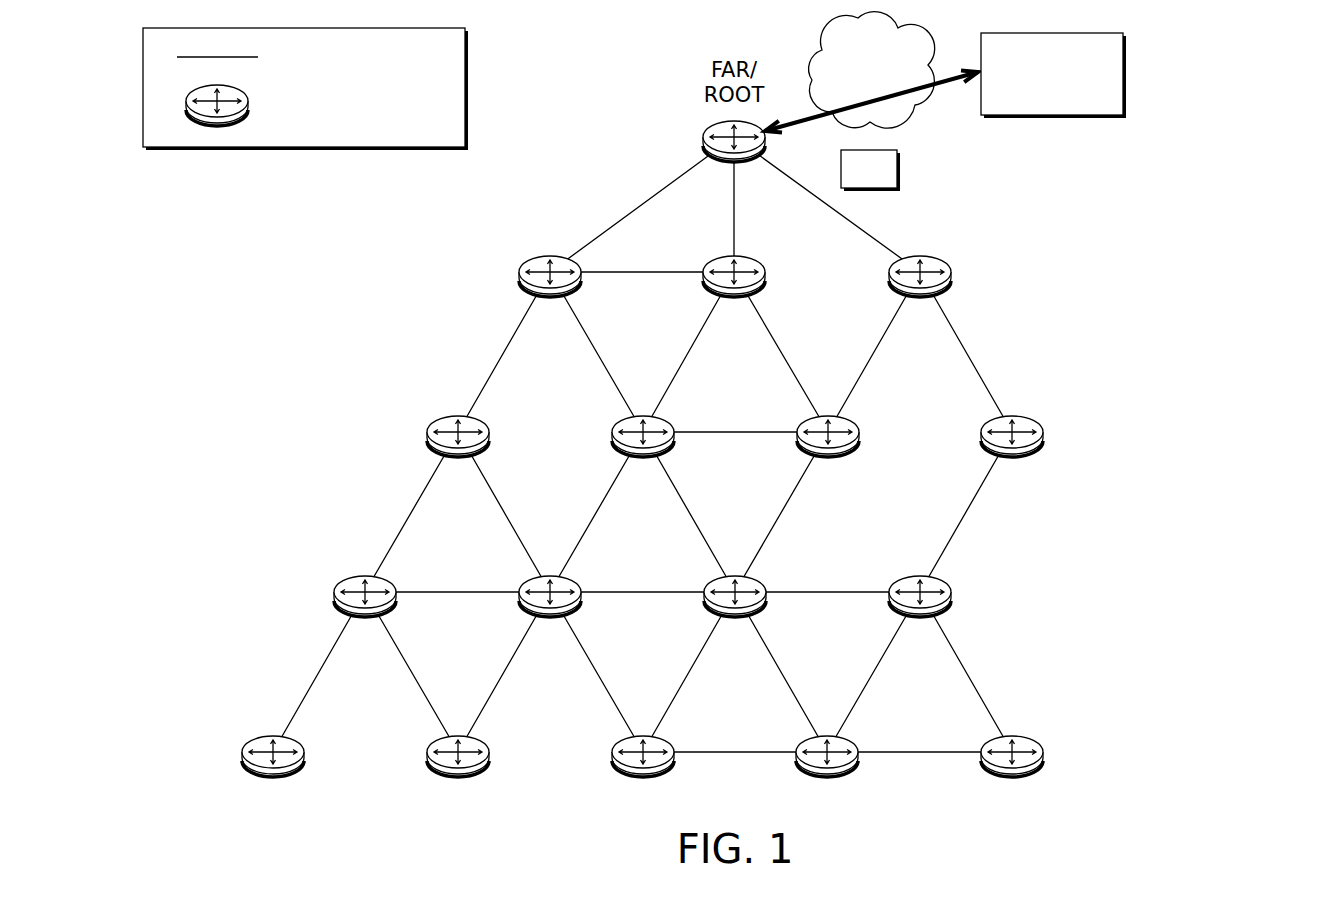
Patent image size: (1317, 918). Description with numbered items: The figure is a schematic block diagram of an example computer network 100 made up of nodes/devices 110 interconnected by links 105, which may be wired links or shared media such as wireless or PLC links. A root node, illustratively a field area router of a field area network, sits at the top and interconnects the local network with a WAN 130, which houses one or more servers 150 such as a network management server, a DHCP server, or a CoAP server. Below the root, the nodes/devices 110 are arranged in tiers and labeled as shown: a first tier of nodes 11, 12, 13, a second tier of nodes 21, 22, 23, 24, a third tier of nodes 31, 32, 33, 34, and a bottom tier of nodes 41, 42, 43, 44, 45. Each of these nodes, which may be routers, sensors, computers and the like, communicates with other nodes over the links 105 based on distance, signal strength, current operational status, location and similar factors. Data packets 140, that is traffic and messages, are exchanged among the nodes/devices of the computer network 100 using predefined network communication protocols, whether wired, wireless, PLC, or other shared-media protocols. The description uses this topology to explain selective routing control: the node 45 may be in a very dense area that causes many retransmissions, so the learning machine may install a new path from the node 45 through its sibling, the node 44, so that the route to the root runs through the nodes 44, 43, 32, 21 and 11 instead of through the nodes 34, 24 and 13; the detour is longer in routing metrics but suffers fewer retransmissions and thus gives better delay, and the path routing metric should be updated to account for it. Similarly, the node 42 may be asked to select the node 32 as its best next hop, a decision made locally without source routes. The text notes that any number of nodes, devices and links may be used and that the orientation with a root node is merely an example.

The computer network 100 is at (1230, 83).
The links 105 is at (288, 57).
The nodes/devices 110 is at (301, 105).
The WAN 130 is at (851, 89).
The data packets 140 is at (933, 192).
The servers 150 is at (1035, 97).
The node 11 is at (550, 295).
The node 12 is at (734, 295).
The node 13 is at (920, 295).
The node 21 is at (458, 455).
The node 22 is at (643, 455).
The node 23 is at (828, 455).
The node 24 is at (1012, 455).
The node 31 is at (365, 615).
The node 32 is at (550, 615).
The node 33 is at (735, 615).
The node 34 is at (920, 615).
The node 41 is at (273, 775).
The node 42 is at (458, 775).
The node 43 is at (643, 775).
The node 44 is at (827, 775).
The node 45 is at (1012, 775).